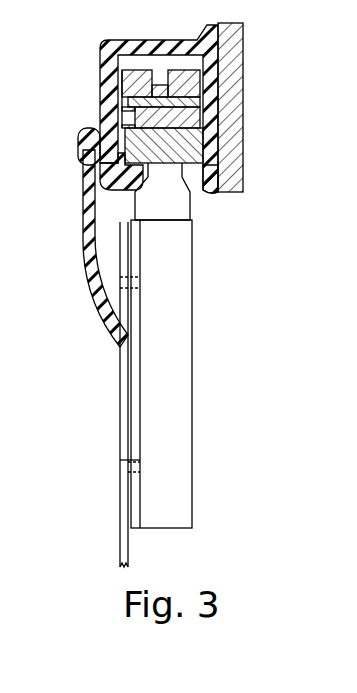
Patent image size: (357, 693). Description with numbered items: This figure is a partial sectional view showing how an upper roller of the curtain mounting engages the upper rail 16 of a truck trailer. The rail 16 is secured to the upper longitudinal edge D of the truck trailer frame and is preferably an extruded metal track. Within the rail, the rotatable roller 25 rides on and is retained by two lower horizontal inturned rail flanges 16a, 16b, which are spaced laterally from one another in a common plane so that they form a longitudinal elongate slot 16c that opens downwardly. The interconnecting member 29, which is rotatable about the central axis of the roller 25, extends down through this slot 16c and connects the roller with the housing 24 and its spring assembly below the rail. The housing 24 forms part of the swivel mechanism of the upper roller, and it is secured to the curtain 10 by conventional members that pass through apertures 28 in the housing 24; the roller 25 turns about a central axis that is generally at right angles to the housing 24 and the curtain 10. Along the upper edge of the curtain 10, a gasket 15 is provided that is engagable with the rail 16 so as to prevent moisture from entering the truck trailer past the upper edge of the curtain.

The upper rail 16 is at (243, 27).
The upper longitudinal edge D is at (240, 117).
The lower horizontal inturned rail flange 16a is at (80, 155).
The gasket 15 is at (90, 208).
The rotatable roller 25 is at (202, 79).
The lower horizontal inturned rail flange 16b is at (128, 144).
The longitudinal elongate slot 16c is at (195, 185).
The interconnecting member 29 is at (180, 200).
The housing 24 is at (183, 275).
The curtain 10 is at (123, 410).
The apertures 28 is at (135, 465).